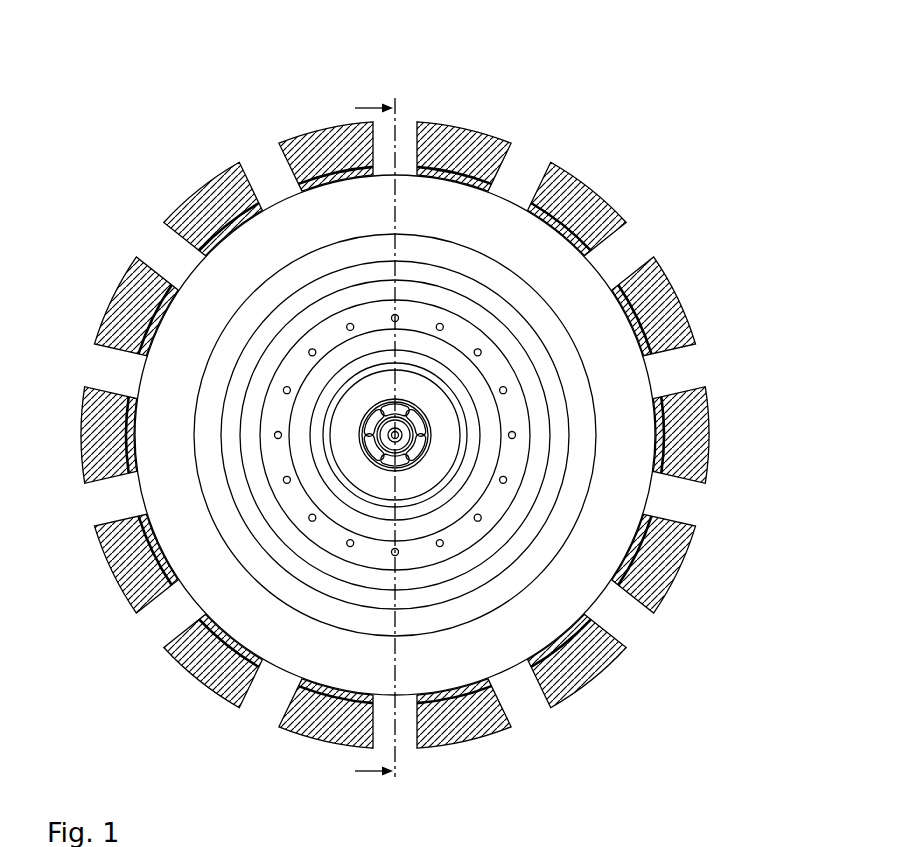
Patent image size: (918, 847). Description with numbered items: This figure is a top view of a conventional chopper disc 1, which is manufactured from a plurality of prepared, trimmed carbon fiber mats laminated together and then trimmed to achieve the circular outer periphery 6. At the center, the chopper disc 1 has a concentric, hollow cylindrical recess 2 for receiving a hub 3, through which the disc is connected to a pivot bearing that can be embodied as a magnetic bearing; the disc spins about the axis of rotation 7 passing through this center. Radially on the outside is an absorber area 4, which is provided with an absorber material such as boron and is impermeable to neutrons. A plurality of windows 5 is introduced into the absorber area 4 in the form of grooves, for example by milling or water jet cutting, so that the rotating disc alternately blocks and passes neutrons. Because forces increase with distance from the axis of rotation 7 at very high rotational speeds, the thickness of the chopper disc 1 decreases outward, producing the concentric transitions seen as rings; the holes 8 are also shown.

The chopper disc 1 is at (550, 82).
The hollow cylindrical recess 2 is at (370, 464).
The hub 3 is at (414, 467).
The absorber area 4 is at (663, 297).
The windows 5 is at (257, 157).
The circular outer periphery 6 is at (712, 444).
The axis of rotation 7 is at (399, 435).
The through holes 8 is at (525, 482).